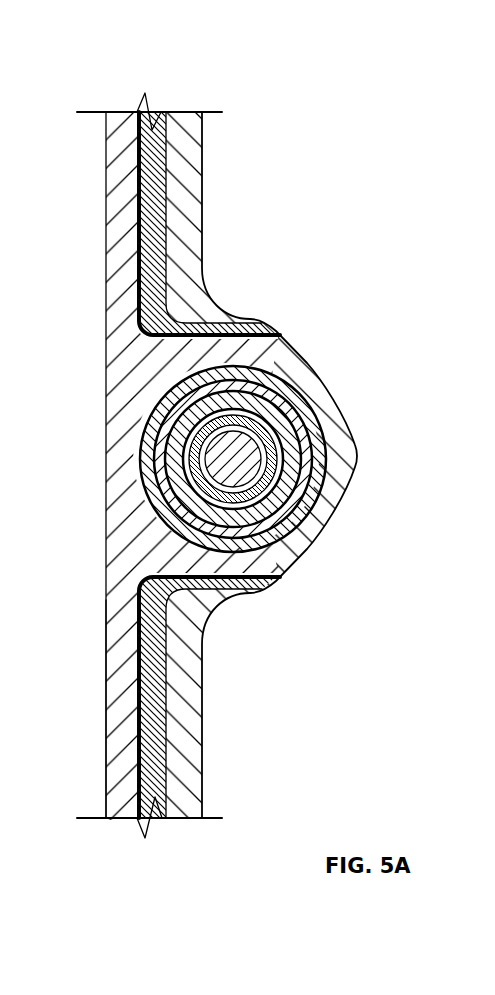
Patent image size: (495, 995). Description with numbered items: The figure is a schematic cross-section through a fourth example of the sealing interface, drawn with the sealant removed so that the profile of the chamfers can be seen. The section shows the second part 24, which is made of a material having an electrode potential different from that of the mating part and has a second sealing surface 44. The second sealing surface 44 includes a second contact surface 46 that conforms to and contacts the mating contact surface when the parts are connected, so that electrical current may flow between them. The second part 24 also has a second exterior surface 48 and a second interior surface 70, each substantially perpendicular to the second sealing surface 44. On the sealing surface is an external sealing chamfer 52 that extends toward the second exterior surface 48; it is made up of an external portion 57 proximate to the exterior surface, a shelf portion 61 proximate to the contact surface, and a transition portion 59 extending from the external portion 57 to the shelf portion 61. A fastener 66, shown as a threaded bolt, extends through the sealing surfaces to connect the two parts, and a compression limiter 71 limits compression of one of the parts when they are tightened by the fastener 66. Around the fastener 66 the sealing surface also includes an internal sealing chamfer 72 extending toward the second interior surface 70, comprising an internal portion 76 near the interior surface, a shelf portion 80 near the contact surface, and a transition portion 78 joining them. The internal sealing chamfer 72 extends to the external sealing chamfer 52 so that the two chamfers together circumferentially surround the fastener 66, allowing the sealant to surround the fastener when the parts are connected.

The second part 24 is at (193, 78).
The second sealing surface 44 is at (121, 103).
The second contact surface 46 is at (182, 157).
The second exterior surface 48 is at (104, 212).
The external sealing chamfer 52 is at (100, 655).
The external portion 57 is at (117, 702).
The transition portion 59 is at (148, 742).
The shelf portion 61 is at (160, 792).
The fastener 66 is at (233, 459).
The second interior surface 70 is at (201, 210).
The compression limiter 71 is at (342, 430).
The internal sealing chamfer 72 is at (329, 366).
The internal portion 76 is at (322, 466).
The transition portion 78 is at (312, 463).
The shelf portion 80 is at (300, 476).